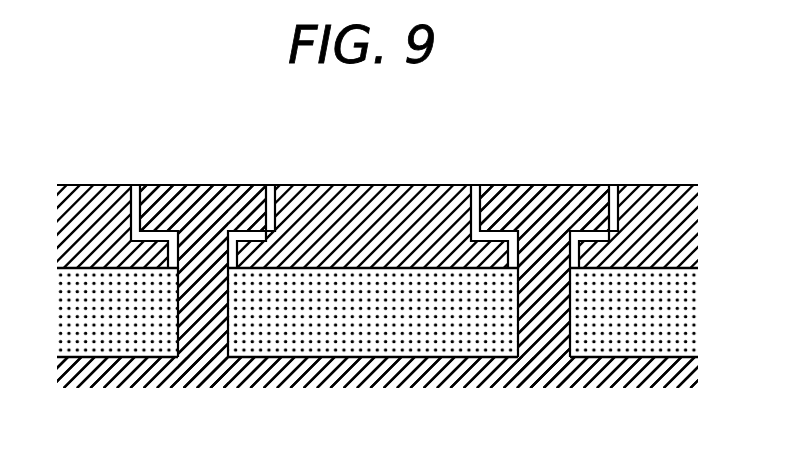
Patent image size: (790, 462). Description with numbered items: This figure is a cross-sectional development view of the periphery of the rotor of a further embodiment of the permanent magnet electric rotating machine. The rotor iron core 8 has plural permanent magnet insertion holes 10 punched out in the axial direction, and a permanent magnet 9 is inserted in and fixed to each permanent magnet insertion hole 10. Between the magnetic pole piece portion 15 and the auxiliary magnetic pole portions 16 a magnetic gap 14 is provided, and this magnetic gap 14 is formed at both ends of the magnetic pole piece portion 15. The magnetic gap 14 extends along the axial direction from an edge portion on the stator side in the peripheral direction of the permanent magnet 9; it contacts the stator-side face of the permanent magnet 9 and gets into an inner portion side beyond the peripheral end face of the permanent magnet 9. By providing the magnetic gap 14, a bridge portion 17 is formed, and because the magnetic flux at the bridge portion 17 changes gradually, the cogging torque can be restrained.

The rotor iron core 8 is at (491, 450).
The permanent magnet 9 is at (393, 356).
The permanent magnet insertion hole 10 is at (293, 362).
The magnetic gap 14 is at (137, 189).
The magnetic pole piece portion 15 is at (85, 184).
The auxiliary magnetic pole portion 16 is at (203, 196).
The bridge portion 17 is at (175, 188).